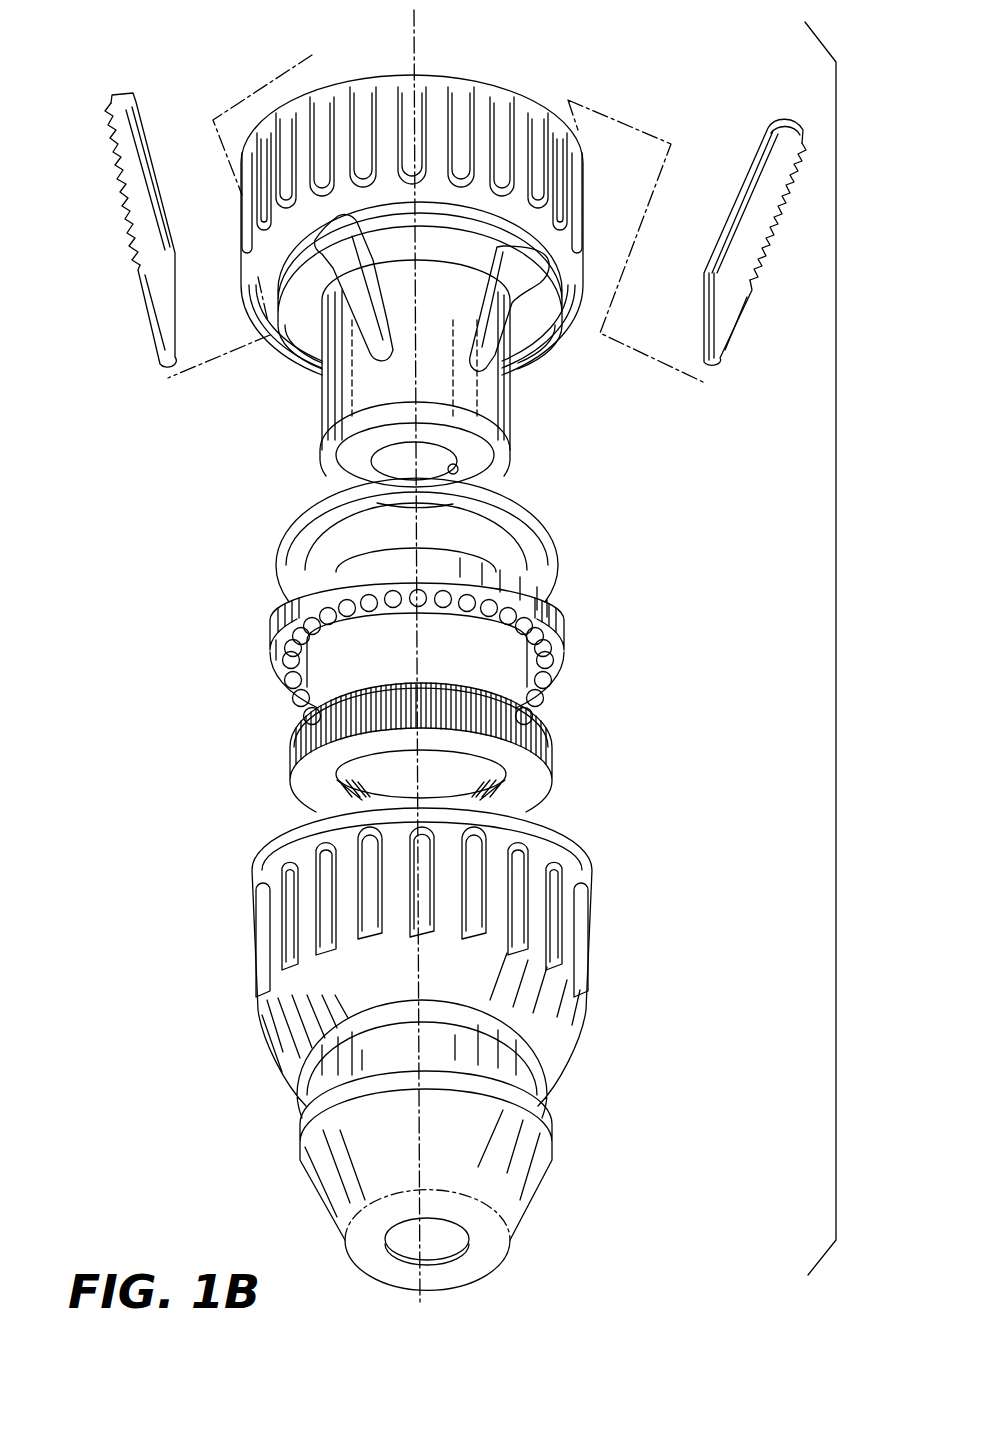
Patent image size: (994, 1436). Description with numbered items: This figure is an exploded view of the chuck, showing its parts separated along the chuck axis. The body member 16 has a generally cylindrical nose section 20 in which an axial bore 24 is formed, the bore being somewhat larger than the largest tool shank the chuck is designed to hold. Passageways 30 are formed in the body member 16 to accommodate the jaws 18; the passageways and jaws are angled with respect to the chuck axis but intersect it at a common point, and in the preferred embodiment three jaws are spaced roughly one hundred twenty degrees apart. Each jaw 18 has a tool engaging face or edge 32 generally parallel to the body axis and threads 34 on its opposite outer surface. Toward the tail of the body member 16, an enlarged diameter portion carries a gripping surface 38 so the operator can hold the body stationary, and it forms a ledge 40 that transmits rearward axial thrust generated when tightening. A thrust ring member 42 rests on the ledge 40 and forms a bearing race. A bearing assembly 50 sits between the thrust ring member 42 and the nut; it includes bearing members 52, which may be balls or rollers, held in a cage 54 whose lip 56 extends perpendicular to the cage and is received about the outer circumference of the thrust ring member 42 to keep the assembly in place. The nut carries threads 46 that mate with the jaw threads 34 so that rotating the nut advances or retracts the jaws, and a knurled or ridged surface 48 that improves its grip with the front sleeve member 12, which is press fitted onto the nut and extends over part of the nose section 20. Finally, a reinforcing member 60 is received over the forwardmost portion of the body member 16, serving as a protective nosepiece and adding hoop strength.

The front sleeve member 12 is at (590, 1012).
The body member 16 is at (508, 402).
The jaws 18 is at (752, 176).
The nose section 20 is at (318, 405).
The axial bore 24 is at (460, 469).
The passageways 30 is at (318, 355).
The tool engaging face or edge 32 is at (705, 322).
The threads 34 is at (124, 206).
The gripping surface 38 is at (470, 95).
The ledge 40 is at (492, 245).
The thrust ring member 42 is at (565, 562).
The threads 46 is at (545, 733).
The knurled or ridged surface 48 is at (302, 750).
The bearing assembly 50 is at (566, 618).
The bearing members 52 is at (549, 639).
The cage 54 is at (283, 655).
The lip 56 is at (282, 605).
The reinforcing member 60 is at (548, 1183).